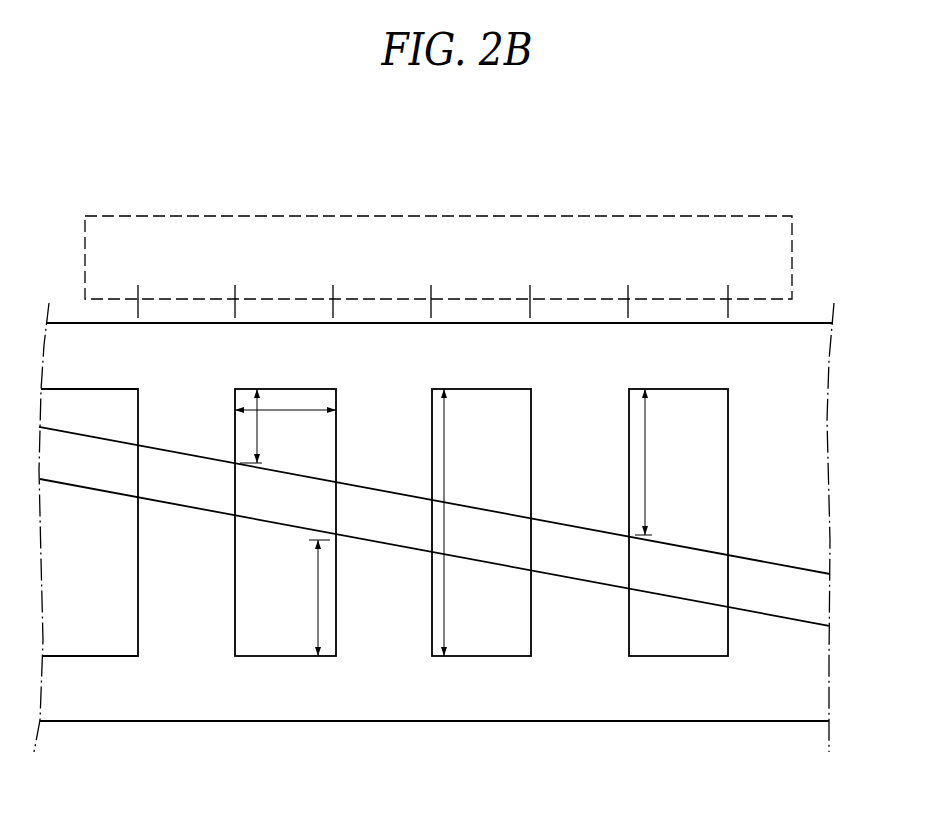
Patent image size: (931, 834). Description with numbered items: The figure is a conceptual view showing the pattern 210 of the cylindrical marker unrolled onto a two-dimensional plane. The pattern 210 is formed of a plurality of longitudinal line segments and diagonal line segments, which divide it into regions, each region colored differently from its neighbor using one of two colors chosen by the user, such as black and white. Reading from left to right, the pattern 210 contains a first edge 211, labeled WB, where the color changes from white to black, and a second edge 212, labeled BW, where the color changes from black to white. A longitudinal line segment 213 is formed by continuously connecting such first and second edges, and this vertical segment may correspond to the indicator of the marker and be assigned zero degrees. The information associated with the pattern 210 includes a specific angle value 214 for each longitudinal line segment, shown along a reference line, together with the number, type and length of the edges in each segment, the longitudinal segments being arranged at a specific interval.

The pattern 210 is at (117, 691).
The first edge 211 is at (318, 618).
The second edge 212 is at (647, 488).
The longitudinal line segment 213 is at (481, 522).
The specific angle value 214 is at (727, 215).